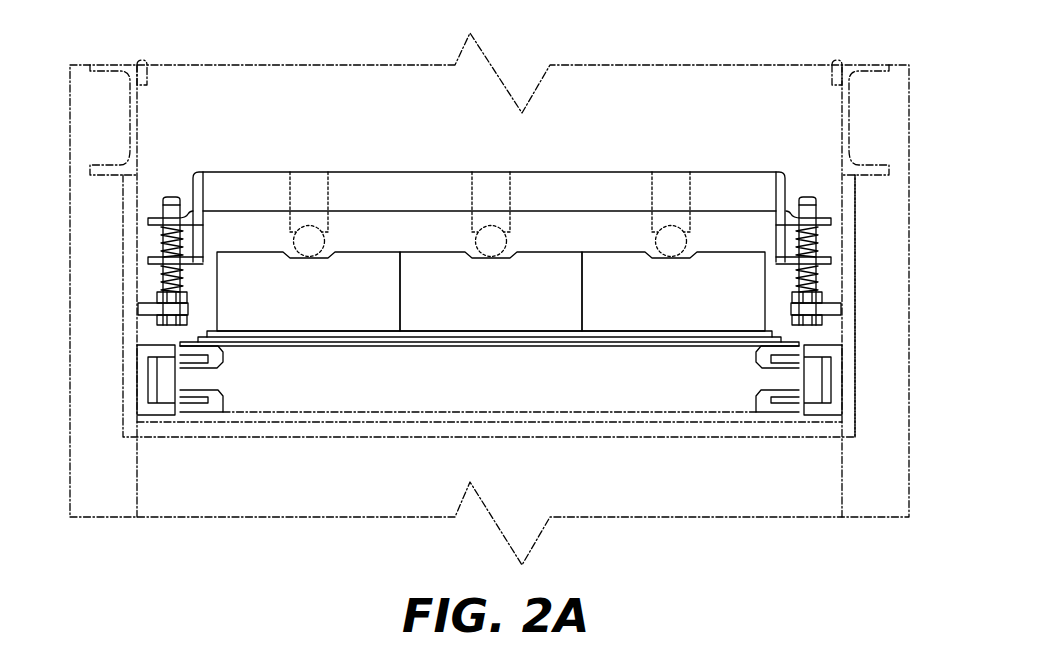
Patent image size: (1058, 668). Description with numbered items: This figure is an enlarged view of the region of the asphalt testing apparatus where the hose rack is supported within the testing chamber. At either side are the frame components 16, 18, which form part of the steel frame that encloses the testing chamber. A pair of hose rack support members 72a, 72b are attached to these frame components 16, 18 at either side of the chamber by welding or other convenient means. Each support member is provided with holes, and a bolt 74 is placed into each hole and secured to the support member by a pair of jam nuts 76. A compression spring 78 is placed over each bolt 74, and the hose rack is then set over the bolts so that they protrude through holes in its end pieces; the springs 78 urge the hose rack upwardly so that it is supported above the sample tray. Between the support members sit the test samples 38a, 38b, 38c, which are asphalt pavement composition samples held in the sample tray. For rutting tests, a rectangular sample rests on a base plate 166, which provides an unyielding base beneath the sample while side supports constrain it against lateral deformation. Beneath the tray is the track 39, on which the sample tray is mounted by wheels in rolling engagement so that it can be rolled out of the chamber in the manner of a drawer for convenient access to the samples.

The frame component 16 is at (132, 407).
The frame component 18 is at (850, 237).
The test sample 38a is at (327, 313).
The test sample 38b is at (510, 313).
The test sample 38c is at (694, 313).
The track 39 is at (162, 408).
The bolt 74 is at (167, 197).
The jam nut 76 is at (802, 317).
The compression spring 78 is at (163, 247).
The hose rack support member 72a is at (147, 305).
The hose rack support member 72b is at (833, 307).
The base plate 166 is at (535, 340).